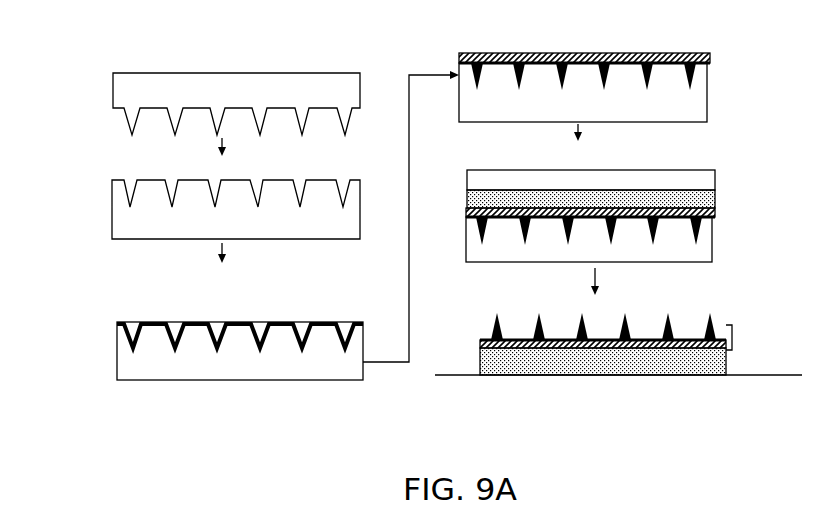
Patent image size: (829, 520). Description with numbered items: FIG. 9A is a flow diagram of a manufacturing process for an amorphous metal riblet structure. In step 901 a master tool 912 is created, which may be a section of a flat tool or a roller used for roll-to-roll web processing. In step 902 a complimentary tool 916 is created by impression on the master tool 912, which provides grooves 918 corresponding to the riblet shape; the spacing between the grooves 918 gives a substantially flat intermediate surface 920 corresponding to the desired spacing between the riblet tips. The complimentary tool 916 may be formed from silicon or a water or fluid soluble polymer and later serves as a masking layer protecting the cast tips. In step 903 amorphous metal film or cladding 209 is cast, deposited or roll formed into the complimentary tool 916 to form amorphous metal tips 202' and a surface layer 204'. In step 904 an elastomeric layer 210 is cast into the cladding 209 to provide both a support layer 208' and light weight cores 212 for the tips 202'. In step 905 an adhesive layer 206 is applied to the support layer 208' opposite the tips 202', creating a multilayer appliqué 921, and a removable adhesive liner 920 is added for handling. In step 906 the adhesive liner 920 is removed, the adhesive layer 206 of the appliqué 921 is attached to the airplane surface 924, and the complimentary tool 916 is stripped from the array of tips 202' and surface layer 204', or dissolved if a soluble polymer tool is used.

The master tool creation step 901 is at (74, 74).
The complimentary tool creation step 902 is at (68, 181).
The amorphous metal casting step 903 is at (68, 331).
The elastomeric layer casting step 904 is at (764, 113).
The adhesive and liner application step 905 is at (764, 265).
The aircraft surface application step 906 is at (766, 355).
The master tool 912 is at (278, 65).
The complimentary tool 916 is at (290, 167).
The grooves 918 is at (172, 181).
The removable adhesive liner 920 is at (191, 180).
The surface layer 204' is at (240, 315).
The riblet tips 202' is at (326, 360).
The support layer 208' is at (584, 42).
The amorphous metal film or cladding 209 is at (363, 321).
The elastomeric layer 210 is at (708, 61).
The light weight cores 212 is at (690, 62).
The adhesive layer 206 is at (716, 200).
The multilayer appliqué 921 is at (733, 338).
The airplane surface 924 is at (740, 376).